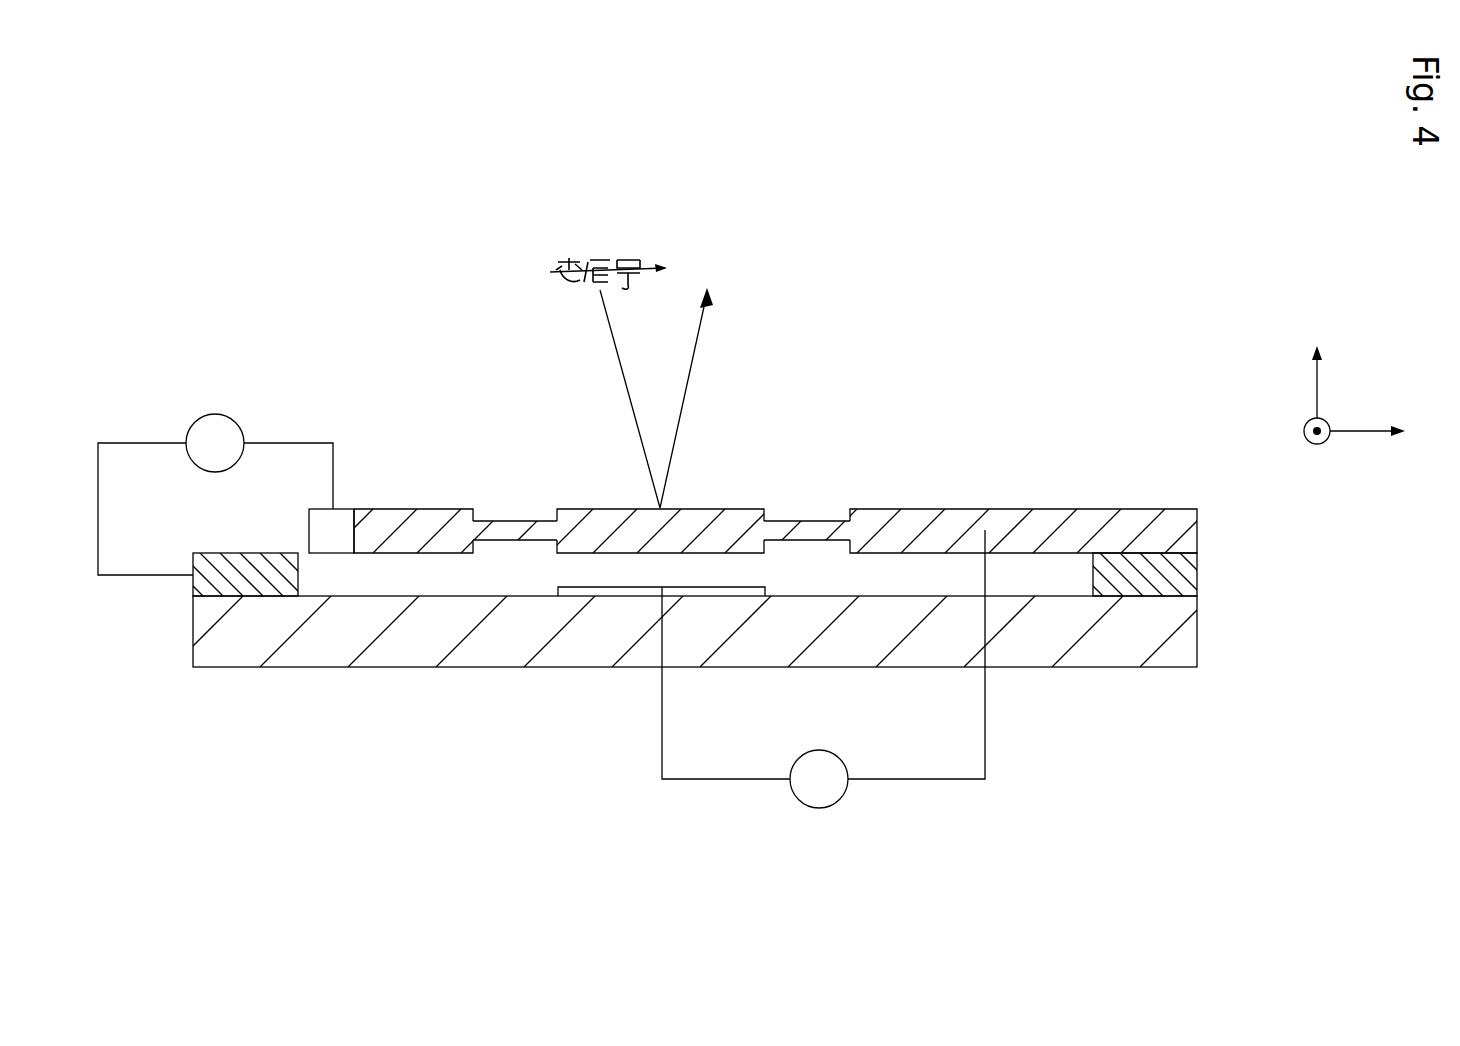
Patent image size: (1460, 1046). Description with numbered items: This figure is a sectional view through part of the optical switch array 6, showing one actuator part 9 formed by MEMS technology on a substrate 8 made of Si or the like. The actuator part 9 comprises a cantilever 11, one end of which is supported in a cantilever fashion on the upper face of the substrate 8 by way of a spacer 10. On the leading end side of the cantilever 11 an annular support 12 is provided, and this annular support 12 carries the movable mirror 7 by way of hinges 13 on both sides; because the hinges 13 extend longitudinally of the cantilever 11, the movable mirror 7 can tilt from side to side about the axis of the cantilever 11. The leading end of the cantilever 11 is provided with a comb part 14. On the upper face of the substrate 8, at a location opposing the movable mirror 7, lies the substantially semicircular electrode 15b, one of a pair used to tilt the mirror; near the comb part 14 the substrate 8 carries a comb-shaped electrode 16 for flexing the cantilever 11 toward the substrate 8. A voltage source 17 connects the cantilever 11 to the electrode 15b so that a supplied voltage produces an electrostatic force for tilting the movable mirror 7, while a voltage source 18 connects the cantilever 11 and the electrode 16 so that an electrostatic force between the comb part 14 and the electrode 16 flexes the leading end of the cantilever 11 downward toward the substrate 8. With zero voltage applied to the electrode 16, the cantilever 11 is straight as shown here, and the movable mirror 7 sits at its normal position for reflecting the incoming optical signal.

The optical switch array 6 is at (1052, 328).
The movable mirror 7 is at (730, 509).
The substrate 8 is at (410, 655).
The actuator part 9 is at (1049, 493).
The spacer 10 is at (1187, 577).
The cantilever 11 is at (958, 509).
The annular support 12 is at (443, 509).
The hinges 13 is at (518, 521).
The comb part 14 is at (345, 508).
The electrode 15b is at (588, 590).
The comb-shaped electrode 16 is at (228, 588).
The voltage source 17 is at (848, 795).
The voltage source 18 is at (213, 415).